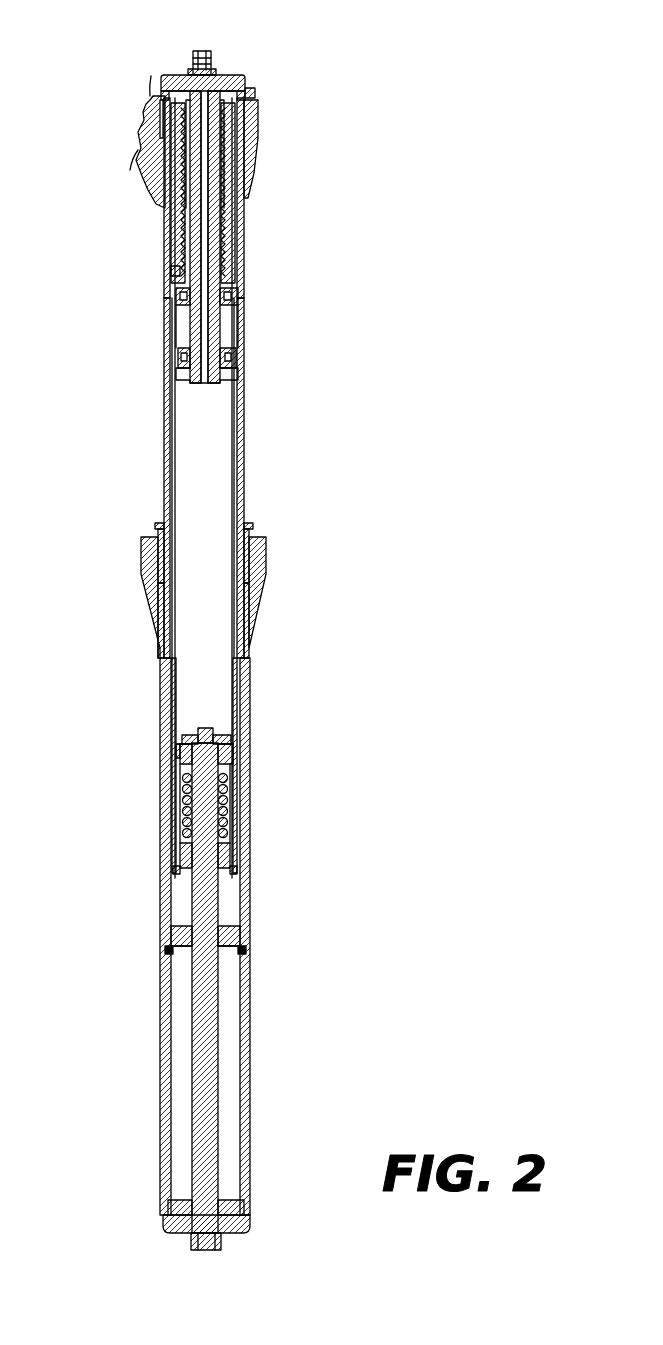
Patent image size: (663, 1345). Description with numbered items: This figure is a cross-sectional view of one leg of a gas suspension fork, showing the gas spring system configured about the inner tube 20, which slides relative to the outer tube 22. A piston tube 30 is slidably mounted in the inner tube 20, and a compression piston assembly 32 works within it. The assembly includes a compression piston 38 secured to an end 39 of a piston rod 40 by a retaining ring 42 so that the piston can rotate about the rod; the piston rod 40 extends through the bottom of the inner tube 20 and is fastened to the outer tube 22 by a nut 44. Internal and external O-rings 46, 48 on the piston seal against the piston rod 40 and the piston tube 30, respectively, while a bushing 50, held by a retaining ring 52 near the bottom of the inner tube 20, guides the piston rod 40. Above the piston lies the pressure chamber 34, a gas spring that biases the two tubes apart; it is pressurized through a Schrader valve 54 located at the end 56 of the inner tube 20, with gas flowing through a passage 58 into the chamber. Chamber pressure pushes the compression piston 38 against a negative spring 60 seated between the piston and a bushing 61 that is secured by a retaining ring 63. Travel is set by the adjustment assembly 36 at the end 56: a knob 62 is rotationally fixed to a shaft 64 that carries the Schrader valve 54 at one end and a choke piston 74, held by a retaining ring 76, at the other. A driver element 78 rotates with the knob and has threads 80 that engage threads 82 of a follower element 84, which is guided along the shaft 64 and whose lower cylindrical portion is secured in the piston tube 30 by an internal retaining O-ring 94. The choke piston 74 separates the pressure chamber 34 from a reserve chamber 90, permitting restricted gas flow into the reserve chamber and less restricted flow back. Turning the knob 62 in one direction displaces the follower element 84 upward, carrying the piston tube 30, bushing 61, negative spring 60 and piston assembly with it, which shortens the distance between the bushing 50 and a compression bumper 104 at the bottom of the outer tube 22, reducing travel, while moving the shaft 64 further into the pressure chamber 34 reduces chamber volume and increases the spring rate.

The inner tube 20 is at (157, 325).
The outer tube 22 is at (243, 1012).
The piston tube 30 is at (166, 380).
The compression piston assembly 32 is at (271, 808).
The pressure chamber 34 is at (192, 468).
The adjustment assembly 36 is at (262, 181).
The compression piston 38 is at (178, 738).
The end of piston rod 39 is at (212, 728).
The piston rod 40 is at (184, 1067).
The retaining ring 42 is at (176, 728).
The nut 44 is at (183, 1235).
The internal O-ring 46 is at (178, 755).
The external O-ring 48 is at (223, 742).
The bushing 50 is at (165, 928).
The retaining ring 52 is at (157, 940).
The Schrader valve 54 is at (192, 44).
The end of inner tube 56 is at (242, 96).
The passage 58 is at (196, 326).
The negative spring 60 is at (182, 815).
The bushing 61 is at (172, 852).
The knob 62 is at (225, 72).
The retaining ring 63 is at (224, 865).
The shaft 64 is at (205, 118).
The choke piston 74 is at (220, 345).
The retaining ring 76 is at (214, 370).
The driver element 78 is at (240, 78).
The threads 80 is at (226, 200).
The threads 82 is at (219, 232).
The follower element 84 is at (168, 247).
The reserve chamber 90 is at (218, 305).
The internal retaining O-ring 94 is at (168, 262).
The compression bumper 104 is at (170, 1192).